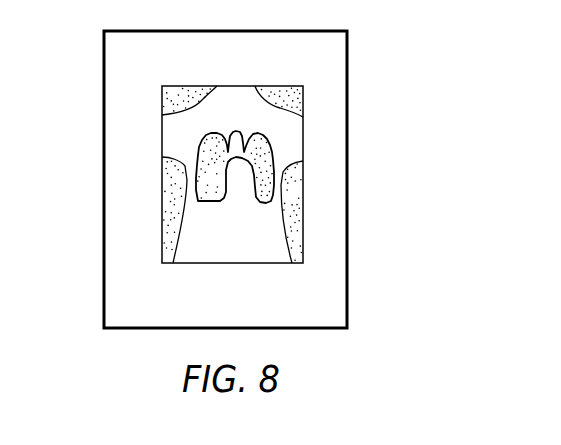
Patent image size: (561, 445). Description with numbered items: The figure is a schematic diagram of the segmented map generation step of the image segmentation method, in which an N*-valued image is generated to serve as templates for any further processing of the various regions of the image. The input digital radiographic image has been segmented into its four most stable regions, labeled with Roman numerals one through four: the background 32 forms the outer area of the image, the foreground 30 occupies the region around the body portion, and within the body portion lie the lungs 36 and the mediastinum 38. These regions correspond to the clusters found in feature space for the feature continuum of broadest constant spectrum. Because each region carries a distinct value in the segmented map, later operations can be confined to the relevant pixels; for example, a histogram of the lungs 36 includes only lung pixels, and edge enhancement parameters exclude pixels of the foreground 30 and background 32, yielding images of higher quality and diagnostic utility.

The foreground 30 is at (87, 286).
The background 32 is at (87, 101).
The lungs 36 is at (275, 156).
The mediastinum 38 is at (238, 230).